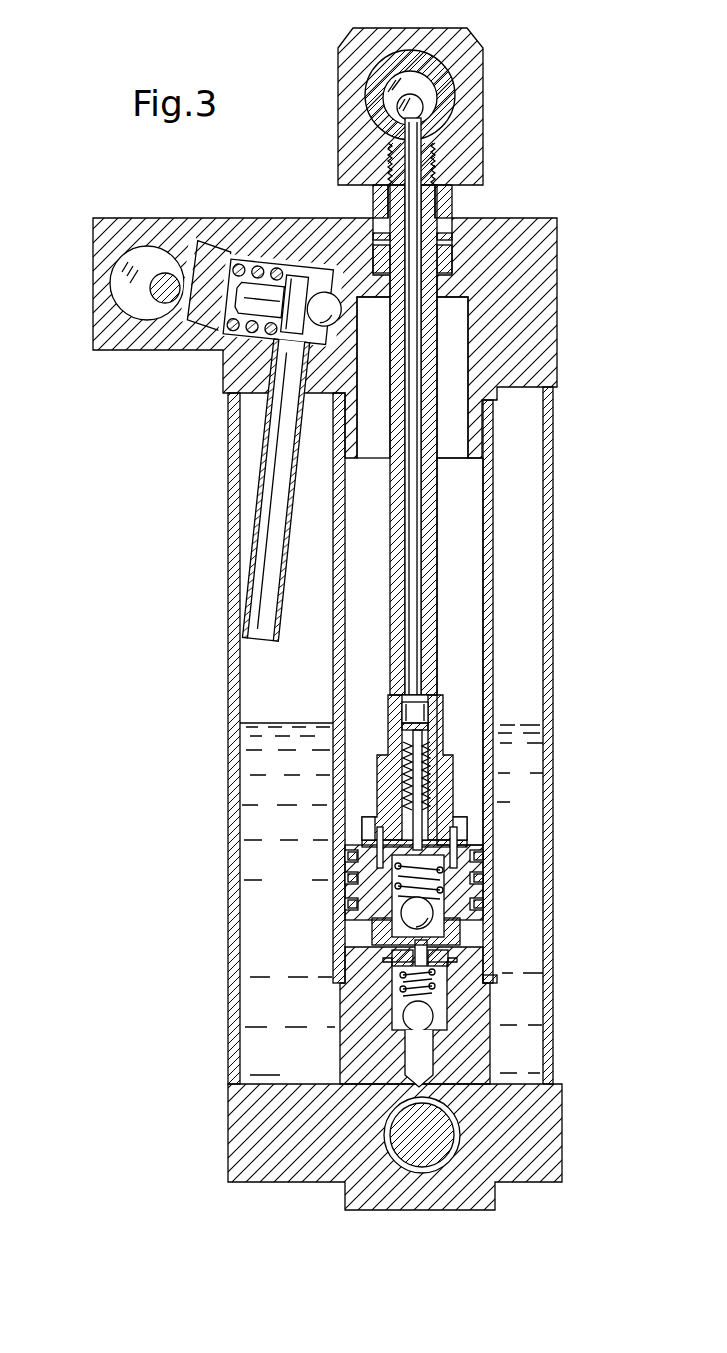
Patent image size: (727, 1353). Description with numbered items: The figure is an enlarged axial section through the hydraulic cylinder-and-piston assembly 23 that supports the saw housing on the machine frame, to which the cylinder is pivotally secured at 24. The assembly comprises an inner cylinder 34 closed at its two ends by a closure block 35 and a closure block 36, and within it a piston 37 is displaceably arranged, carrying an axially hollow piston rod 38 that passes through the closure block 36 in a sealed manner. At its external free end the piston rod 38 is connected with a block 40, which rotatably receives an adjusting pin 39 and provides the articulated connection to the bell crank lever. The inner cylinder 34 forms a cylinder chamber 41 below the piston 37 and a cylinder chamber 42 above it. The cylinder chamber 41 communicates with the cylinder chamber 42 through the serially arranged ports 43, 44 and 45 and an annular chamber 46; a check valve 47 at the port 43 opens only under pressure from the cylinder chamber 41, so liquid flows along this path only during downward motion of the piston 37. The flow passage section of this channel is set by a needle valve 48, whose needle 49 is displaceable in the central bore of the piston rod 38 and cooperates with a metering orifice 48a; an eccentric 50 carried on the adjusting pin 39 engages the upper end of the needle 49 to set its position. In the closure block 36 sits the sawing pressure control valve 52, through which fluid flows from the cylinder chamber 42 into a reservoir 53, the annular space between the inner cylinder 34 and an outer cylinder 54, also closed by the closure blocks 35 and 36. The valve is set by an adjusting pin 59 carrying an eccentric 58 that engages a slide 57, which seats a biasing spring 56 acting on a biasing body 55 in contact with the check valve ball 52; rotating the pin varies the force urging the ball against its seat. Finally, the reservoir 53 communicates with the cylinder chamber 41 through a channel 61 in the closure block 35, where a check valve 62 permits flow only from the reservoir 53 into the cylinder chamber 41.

The hydraulic cylinder-and-piston assembly 23 is at (222, 772).
The pivot point of cylinder on machine frame 24 is at (442, 1138).
The inner cylinder 34 is at (493, 512).
The closure block 35 is at (543, 1103).
The closure block 36 is at (349, 321).
The piston 37 is at (477, 865).
The piston rod 38 is at (435, 555).
The adjusting pin 39 is at (388, 90).
The block 40 is at (476, 58).
The cylinder chamber 41 is at (495, 943).
The cylinder chamber 42 is at (468, 605).
The port 43 is at (405, 935).
The port 44 is at (392, 850).
The port 45 is at (368, 830).
The annular chamber 46 is at (358, 866).
The check valve 47 is at (432, 918).
The needle valve 48 is at (477, 868).
The metering orifice 48a is at (443, 850).
The needle 49 is at (447, 738).
The eccentric 50 is at (418, 108).
The sawing pressure control valve 52 is at (338, 293).
The reservoir 53 is at (255, 722).
The outer cylinder 54 is at (228, 572).
The biasing body 55 is at (297, 280).
The biasing spring 56 is at (248, 267).
The slide 57 is at (198, 258).
The eccentric 58 is at (150, 352).
The adjusting pin 59 is at (113, 288).
The channel 61 is at (485, 1037).
The check valve 62 is at (405, 1050).